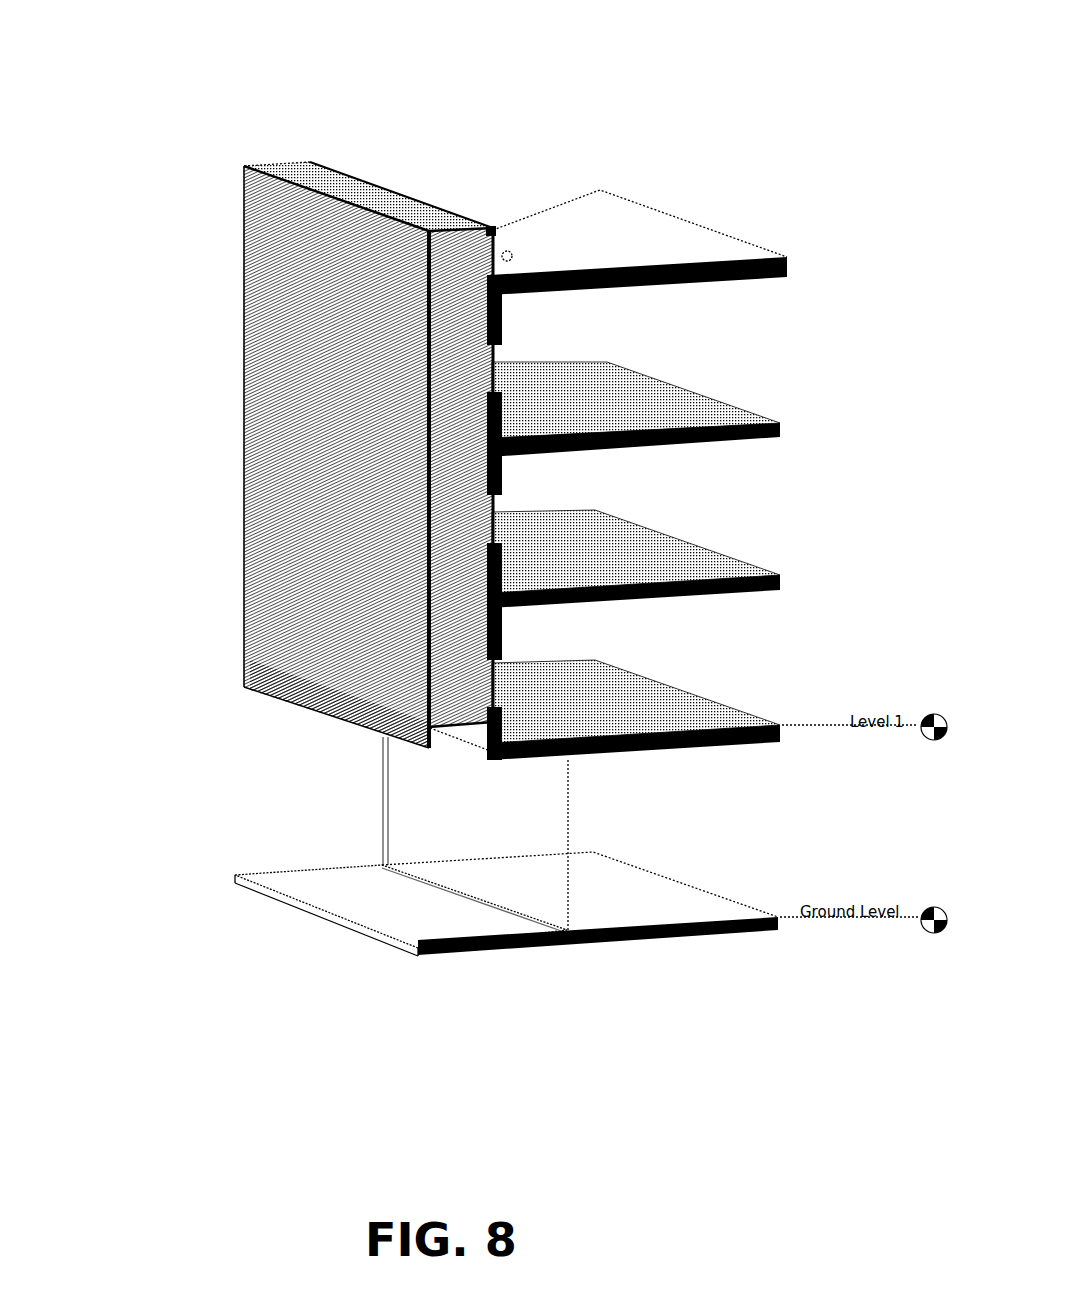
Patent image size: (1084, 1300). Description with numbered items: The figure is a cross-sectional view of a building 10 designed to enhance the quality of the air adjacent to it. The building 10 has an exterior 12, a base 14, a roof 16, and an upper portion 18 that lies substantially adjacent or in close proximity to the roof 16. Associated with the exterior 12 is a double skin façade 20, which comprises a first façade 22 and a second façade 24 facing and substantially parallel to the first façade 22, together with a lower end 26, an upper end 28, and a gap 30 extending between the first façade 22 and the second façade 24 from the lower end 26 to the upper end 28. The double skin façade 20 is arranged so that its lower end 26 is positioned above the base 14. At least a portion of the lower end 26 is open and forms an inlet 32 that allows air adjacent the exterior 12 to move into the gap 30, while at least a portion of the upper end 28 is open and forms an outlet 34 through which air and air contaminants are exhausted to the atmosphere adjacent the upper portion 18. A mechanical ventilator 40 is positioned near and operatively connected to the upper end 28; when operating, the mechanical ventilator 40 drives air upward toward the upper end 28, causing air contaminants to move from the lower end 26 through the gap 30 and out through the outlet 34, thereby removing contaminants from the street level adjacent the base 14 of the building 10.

The building 10 is at (642, 87).
The exterior 12 is at (477, 737).
The base 14 is at (353, 920).
The roof 16 is at (620, 252).
The upper portion 18 is at (503, 323).
The double skin façade 20 is at (238, 207).
The first façade 22 is at (495, 502).
The second façade 24 is at (250, 277).
The lower end 26 is at (240, 704).
The upper end 28 is at (325, 197).
The gap 30 is at (435, 700).
The inlet 32 is at (460, 727).
The outlet 34 is at (494, 231).
The mechanical ventilator 40 is at (503, 252).